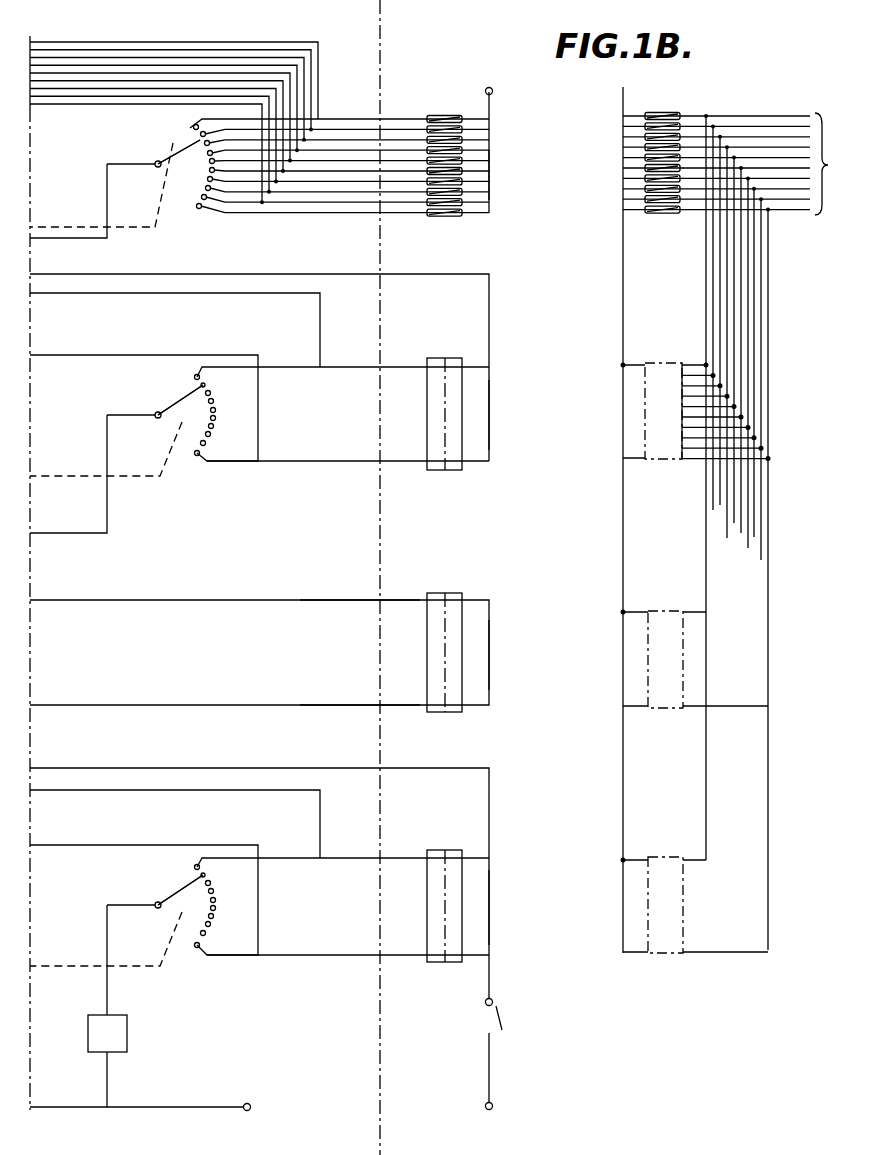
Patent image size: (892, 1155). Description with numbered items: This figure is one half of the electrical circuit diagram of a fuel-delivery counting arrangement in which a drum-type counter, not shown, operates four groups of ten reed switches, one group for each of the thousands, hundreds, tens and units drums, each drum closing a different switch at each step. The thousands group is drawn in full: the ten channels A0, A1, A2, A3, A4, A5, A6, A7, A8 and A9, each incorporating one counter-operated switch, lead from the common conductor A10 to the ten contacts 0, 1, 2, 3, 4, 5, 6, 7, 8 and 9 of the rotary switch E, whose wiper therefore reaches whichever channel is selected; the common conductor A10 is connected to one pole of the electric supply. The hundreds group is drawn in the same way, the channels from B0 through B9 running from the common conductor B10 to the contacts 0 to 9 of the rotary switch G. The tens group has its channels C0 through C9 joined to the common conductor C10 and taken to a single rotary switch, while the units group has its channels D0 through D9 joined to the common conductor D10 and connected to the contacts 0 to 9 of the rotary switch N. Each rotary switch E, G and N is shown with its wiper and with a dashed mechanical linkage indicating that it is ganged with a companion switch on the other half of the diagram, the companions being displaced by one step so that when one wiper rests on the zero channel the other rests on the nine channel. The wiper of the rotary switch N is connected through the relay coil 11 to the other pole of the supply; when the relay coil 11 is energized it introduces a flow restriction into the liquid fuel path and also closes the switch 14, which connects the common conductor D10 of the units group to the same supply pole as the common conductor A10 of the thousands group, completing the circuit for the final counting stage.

The contact 0 is at (190, 128).
The contact 1 is at (200, 134).
The contact 2 is at (204, 143).
The contact 3 is at (207, 153).
The contact 4 is at (209, 161).
The contact 5 is at (209, 170).
The contact 6 is at (207, 181).
The contact 7 is at (208, 191).
The contact 8 is at (207, 197).
The contact 9 is at (202, 207).
The rotary switch E is at (179, 159).
The rotary switch G is at (180, 406).
The rotary switch N is at (180, 896).
The channel A0 is at (330, 119).
The channel A1 is at (349, 129).
The channel A2 is at (375, 139).
The channel A3 is at (396, 150).
The channel A4 is at (410, 160).
The channel A5 is at (315, 172).
The channel A6 is at (329, 182).
The channel A7 is at (342, 193).
The channel A8 is at (361, 203).
The channel A9 is at (406, 214).
The common conductor A10 is at (491, 172).
The channel B0 is at (343, 367).
The channel B9 is at (352, 461).
The common conductor B10 is at (491, 416).
The channel C0 is at (343, 600).
The channel C9 is at (349, 706).
The common conductor C10 is at (491, 670).
The channel D0 is at (343, 858).
The channel D9 is at (352, 956).
The common conductor D10 is at (491, 912).
The relay coil 11 is at (128, 1042).
The switch 14 is at (503, 1020).